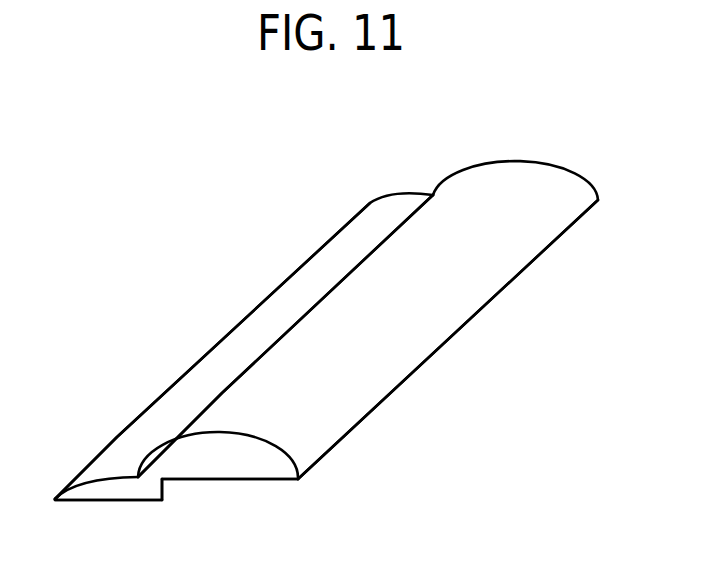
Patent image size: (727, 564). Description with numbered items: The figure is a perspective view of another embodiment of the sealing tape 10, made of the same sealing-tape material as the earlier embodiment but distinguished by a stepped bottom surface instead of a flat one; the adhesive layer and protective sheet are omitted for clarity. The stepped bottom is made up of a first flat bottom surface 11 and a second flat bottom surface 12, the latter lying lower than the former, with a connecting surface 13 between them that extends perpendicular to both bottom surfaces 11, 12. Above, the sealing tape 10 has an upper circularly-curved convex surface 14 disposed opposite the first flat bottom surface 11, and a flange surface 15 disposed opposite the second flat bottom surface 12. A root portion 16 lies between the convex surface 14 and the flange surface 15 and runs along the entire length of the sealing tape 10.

The sealing tape 10 is at (348, 172).
The first flat bottom surface 11 is at (272, 481).
The second flat bottom surface 12 is at (97, 501).
The connecting surface 13 is at (165, 485).
The upper circularly-curved convex surface 14 is at (353, 357).
The flange surface 15 is at (158, 408).
The root portion 16 is at (242, 370).